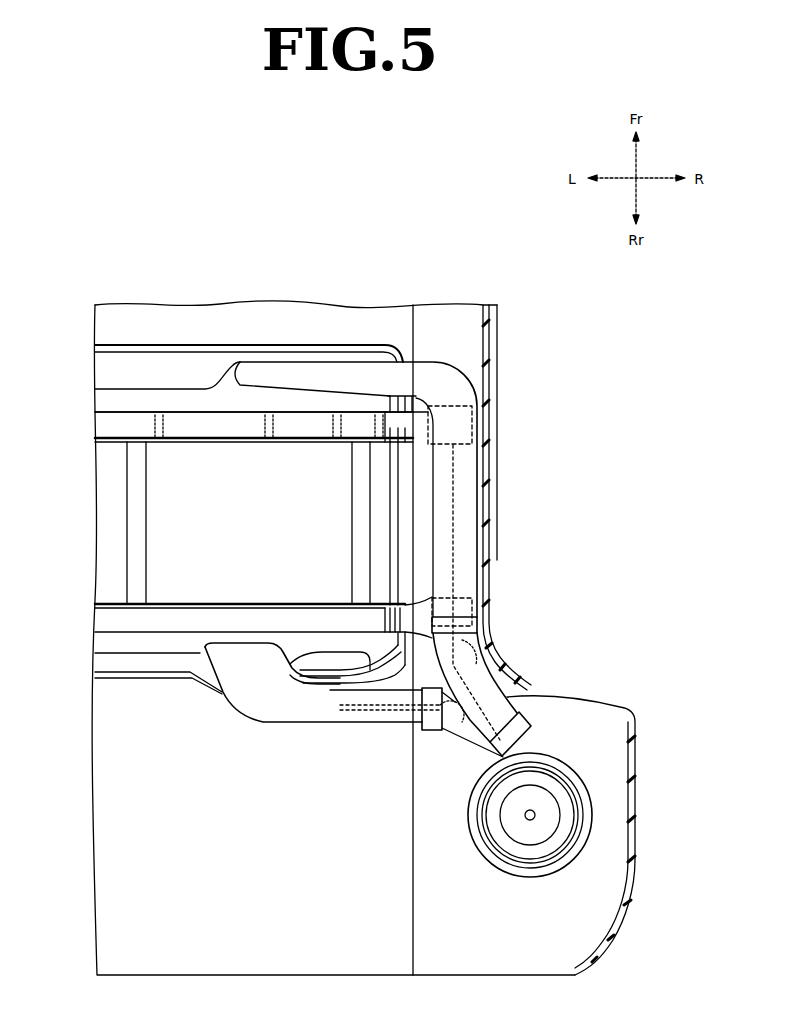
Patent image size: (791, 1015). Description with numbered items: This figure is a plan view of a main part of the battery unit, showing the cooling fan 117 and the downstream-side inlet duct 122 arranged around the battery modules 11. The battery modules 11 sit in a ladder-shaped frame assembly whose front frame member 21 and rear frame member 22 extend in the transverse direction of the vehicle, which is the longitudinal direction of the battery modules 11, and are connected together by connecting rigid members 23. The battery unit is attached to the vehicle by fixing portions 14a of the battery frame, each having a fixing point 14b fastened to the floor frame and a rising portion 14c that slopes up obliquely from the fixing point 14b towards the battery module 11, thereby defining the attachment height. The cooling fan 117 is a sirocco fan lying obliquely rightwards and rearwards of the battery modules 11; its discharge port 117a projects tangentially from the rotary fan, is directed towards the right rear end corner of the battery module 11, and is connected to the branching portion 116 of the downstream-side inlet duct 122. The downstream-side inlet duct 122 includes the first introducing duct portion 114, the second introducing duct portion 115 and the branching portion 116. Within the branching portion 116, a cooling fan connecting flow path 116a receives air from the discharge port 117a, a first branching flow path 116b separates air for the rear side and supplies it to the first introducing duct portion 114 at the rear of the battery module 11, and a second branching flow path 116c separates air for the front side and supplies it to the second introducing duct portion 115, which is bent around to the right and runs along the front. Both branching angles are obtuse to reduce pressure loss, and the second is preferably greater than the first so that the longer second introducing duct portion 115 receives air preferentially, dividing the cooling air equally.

The battery module 11 is at (217, 437).
The front frame member 21 is at (107, 423).
The rear frame member 22 is at (107, 620).
The connecting rigid member 23 is at (355, 522).
The second introducing duct portion 115 is at (318, 378).
The first introducing duct portion 114 is at (263, 698).
The fixing portion 14a is at (425, 450).
The fixing point 14b is at (465, 420).
The rising portion 14c is at (421, 420).
The downstream-side inlet duct 122 is at (481, 463).
The branching portion 116 is at (520, 686).
The cooling fan connecting flow path 116a is at (487, 730).
The first branching flow path 116b is at (473, 728).
The second branching flow path 116c is at (468, 652).
The cooling fan 117 is at (535, 815).
The discharge port 117a is at (545, 695).